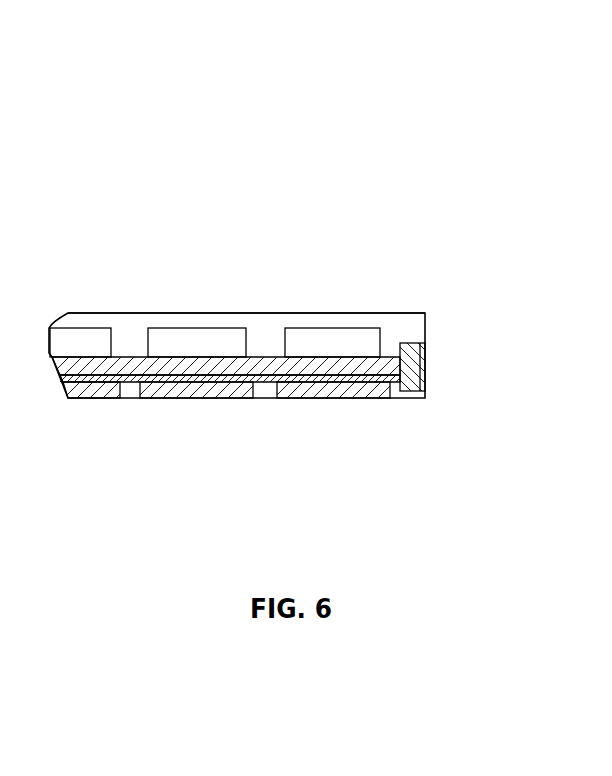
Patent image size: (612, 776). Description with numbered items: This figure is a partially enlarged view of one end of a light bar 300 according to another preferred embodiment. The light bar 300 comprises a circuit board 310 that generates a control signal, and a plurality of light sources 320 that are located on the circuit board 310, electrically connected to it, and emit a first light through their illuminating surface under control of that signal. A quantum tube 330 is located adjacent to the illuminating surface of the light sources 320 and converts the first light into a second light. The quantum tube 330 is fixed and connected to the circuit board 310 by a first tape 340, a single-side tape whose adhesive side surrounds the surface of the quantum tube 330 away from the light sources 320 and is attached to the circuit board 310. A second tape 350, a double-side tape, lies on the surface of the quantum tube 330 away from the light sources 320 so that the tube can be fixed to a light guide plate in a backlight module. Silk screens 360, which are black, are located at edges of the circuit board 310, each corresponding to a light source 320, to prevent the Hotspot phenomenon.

The light bar 300 is at (405, 62).
The circuit board 310 is at (266, 321).
The light sources 320 is at (334, 346).
The quantum tube 330 is at (373, 360).
The first tape 340 is at (416, 378).
The second tape 350 is at (372, 384).
The silk screens 360 is at (208, 391).